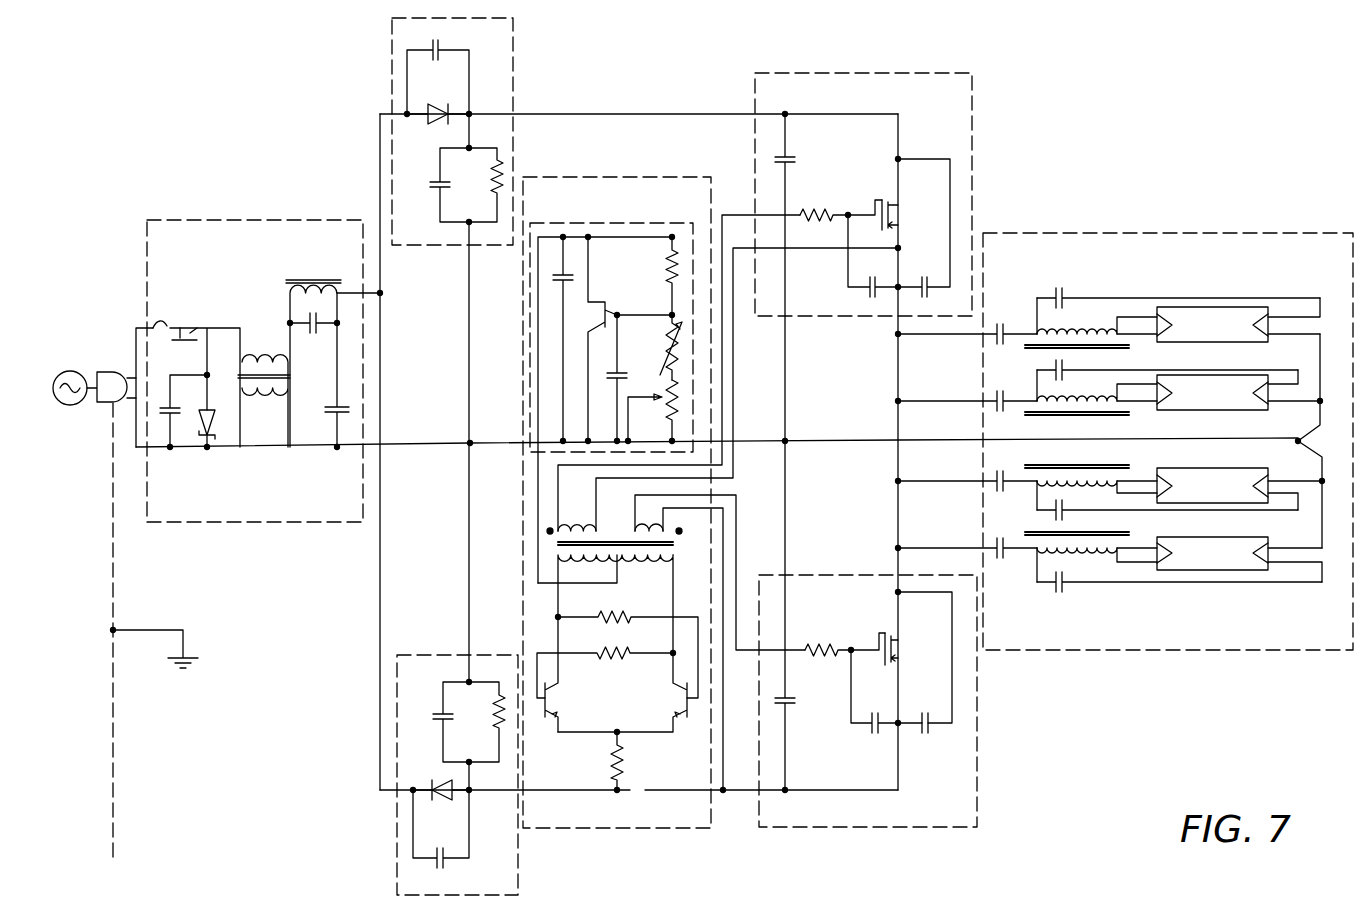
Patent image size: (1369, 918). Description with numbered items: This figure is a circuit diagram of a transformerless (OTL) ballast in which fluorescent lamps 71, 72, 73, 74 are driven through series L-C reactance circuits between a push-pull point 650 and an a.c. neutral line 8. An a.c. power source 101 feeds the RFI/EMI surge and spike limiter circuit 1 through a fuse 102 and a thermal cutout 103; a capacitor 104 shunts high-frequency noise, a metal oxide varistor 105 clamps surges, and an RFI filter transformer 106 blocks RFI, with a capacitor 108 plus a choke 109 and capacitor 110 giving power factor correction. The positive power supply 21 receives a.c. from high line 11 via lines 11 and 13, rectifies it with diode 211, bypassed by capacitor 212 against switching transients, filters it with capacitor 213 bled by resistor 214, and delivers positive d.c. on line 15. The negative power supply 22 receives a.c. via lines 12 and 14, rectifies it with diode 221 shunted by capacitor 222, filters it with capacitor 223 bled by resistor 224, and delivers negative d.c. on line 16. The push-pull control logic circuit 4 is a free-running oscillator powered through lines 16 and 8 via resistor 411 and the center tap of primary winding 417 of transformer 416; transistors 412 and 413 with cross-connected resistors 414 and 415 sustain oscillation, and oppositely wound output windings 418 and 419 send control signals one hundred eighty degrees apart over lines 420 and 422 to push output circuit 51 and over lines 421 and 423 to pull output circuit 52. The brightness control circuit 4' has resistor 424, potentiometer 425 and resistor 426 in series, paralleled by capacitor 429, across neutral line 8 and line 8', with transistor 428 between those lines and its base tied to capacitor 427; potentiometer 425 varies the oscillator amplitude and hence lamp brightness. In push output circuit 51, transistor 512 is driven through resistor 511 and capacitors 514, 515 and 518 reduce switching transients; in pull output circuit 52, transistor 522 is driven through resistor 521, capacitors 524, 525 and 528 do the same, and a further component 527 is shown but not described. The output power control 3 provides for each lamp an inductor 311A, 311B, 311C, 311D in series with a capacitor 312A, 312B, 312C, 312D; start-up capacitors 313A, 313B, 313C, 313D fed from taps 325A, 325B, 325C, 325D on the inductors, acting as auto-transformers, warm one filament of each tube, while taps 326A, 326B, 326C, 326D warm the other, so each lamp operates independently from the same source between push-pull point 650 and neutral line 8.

The RFI/EMI surge and spike limiter circuit 1 is at (219, 218).
The a.c. power source 101 is at (68, 371).
The fuse 102 is at (160, 326).
The thermal cutout 103 is at (186, 338).
The capacitor 104 is at (176, 440).
The metal oxide varistor 105 is at (215, 428).
The RFI filter transformer 106 is at (262, 358).
The capacitor 108 is at (330, 406).
The choke 109 is at (312, 278).
The capacitor 110 is at (318, 333).
The a.c. high line 11 is at (386, 272).
The line 12 is at (386, 330).
The line 13 is at (471, 303).
The line 14 is at (468, 564).
The positive d.c. line 15 is at (633, 113).
The negative d.c. line 16 is at (553, 790).
The a.c. neutral line 8 is at (717, 464).
The line 8' is at (605, 384).
The positive power supply 21 is at (392, 73).
The rectifier diode 211 is at (430, 107).
The capacitor 212 is at (442, 46).
The capacitor 213 is at (436, 180).
The resistor 214 is at (505, 163).
The negative power supply 22 is at (397, 828).
The rectifier diode 221 is at (438, 784).
The capacitor 222 is at (447, 865).
The capacitor 223 is at (438, 710).
The resistor 224 is at (494, 725).
The push pull control logic circuit 4 is at (601, 502).
The brightness control circuit 4' is at (611, 320).
The resistor 411 is at (622, 760).
The transistor 412 is at (555, 708).
The transistor 413 is at (677, 708).
The resistor 414 is at (630, 655).
The resistor 415 is at (630, 619).
The transformer 416 is at (672, 544).
The primary winding 417 is at (648, 562).
The output winding 418 is at (556, 528).
The output winding 419 is at (648, 522).
The line 420 is at (723, 418).
The line 421 is at (738, 500).
The line 422 is at (736, 463).
The line 423 is at (723, 545).
The resistor 424 is at (685, 392).
The potentiometer 425 is at (665, 340).
The resistor 426 is at (666, 262).
The capacitor 427 is at (622, 372).
The transistor 428 is at (610, 305).
The capacitor 429 is at (570, 243).
The push output circuit 51 is at (952, 73).
The resistor 511 is at (828, 210).
The transistor 512 is at (897, 222).
The capacitor 514 is at (797, 155).
The capacitor 515 is at (866, 297).
The capacitor 518 is at (928, 272).
The push-pull point 650 is at (897, 366).
The pull output circuit 52 is at (978, 793).
The resistor 521 is at (827, 640).
The transistor 522 is at (900, 657).
The capacitor 524 is at (797, 705).
The capacitor 525 is at (873, 733).
The line 527 is at (953, 697).
The capacitor 528 is at (937, 737).
The output power control 3 is at (1180, 230).
The inductor 311A is at (1072, 330).
The inductor 311B is at (1113, 420).
The inductor 311C is at (1110, 468).
The inductor 311D is at (1092, 553).
The capacitor 312A is at (1003, 315).
The capacitor 312B is at (1002, 390).
The capacitor 312C is at (1004, 492).
The capacitor 312D is at (1004, 560).
The start-up capacitor 313A is at (1062, 290).
The start-up capacitor 313B is at (1065, 368).
The start-up capacitor 313C is at (1065, 510).
The start-up capacitor 313D is at (1065, 592).
The tap 325A is at (1037, 297).
The tap 325B is at (1035, 405).
The tap 325C is at (1035, 488).
The tap 325D is at (1040, 585).
The tap 326A is at (1133, 317).
The tap 326B is at (1140, 384).
The tap 326C is at (1147, 495).
The tap 326D is at (1147, 566).
The fluorescent lamp 71 is at (1192, 324).
The fluorescent lamp 72 is at (1192, 392).
The fluorescent lamp 73 is at (1192, 485).
The fluorescent lamp 74 is at (1192, 553).